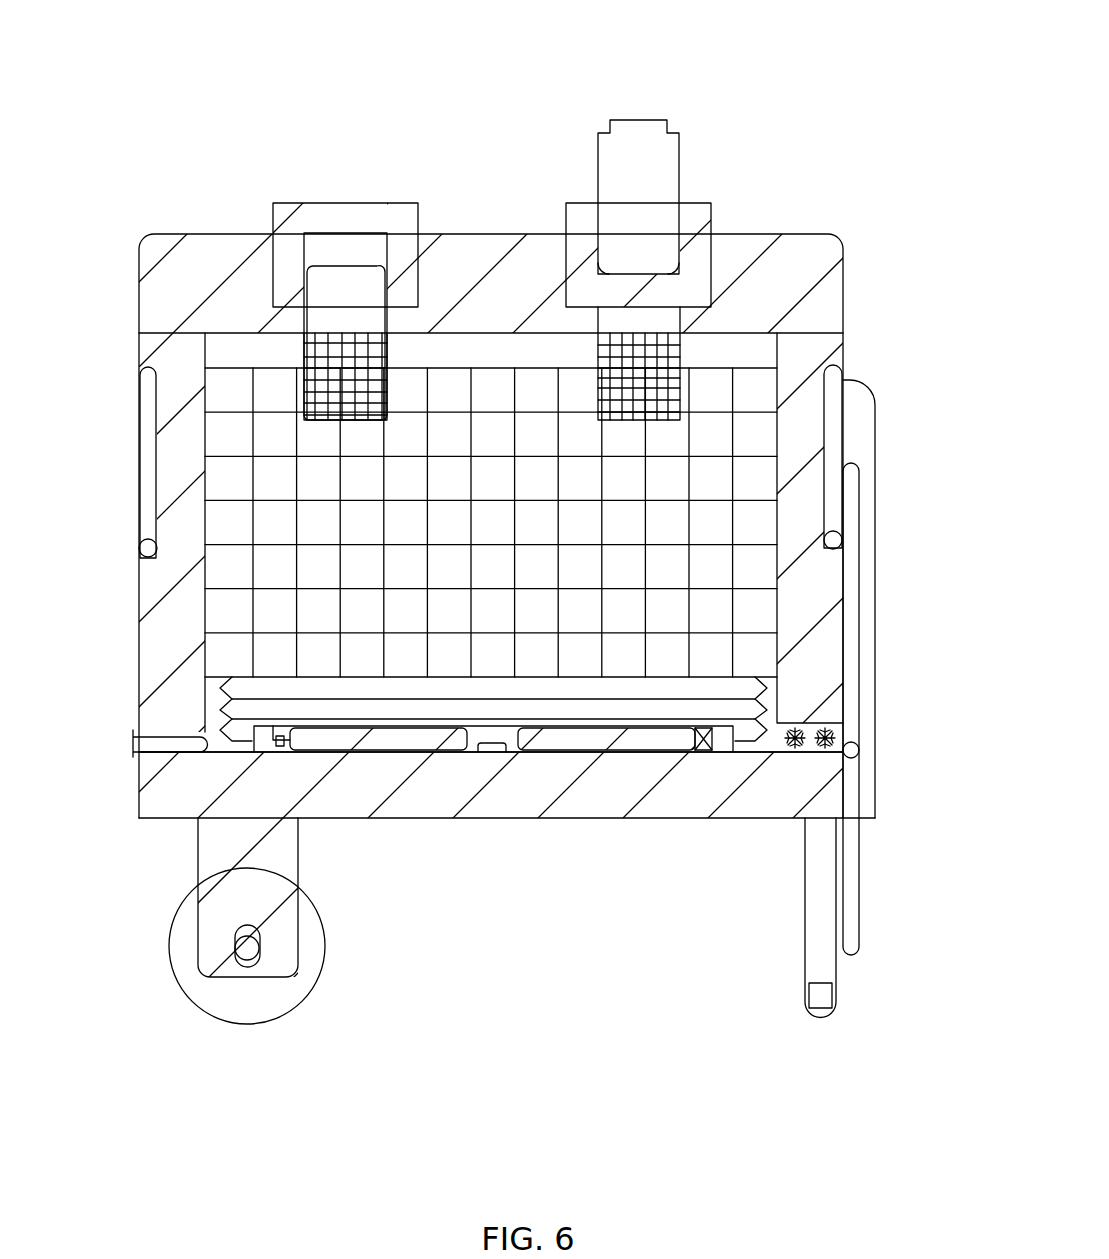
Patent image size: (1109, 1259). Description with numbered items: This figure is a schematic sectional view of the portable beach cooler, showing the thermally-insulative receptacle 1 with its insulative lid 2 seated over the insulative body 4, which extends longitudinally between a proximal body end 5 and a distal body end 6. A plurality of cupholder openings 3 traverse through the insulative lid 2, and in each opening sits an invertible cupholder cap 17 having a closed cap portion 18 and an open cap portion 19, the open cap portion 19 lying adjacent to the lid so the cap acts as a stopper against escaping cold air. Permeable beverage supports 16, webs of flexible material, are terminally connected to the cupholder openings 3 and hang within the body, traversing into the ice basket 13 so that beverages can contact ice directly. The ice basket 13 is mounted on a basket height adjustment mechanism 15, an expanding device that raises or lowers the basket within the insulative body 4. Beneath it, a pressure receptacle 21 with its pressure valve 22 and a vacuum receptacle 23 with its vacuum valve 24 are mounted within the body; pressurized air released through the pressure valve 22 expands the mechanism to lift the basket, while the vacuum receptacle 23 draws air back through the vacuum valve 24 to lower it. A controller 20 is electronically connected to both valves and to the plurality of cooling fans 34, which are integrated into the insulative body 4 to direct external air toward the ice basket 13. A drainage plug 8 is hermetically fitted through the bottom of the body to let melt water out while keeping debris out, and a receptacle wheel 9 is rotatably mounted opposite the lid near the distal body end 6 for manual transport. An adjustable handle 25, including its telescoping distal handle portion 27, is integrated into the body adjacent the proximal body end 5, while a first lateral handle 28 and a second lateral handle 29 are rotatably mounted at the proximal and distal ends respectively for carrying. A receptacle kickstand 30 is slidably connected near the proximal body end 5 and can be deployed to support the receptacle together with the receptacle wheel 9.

The thermally-insulative receptacle 1 is at (250, 34).
The insulative lid 2 is at (210, 245).
The cupholder openings 3 is at (335, 245).
The insulative body 4 is at (520, 798).
The proximal body end 5 is at (708, 556).
The distal body end 6 is at (267, 555).
The drainage plug 8 is at (195, 755).
The receptacle wheels 9 is at (290, 992).
The ice basket 13 is at (254, 351).
The basket height adjustment mechanism 15 is at (230, 712).
The permeable beverage supports 16 is at (384, 405).
The invertible cupholder cap 17 is at (374, 166).
The closed cap portion 18 is at (366, 257).
The open cap portion 19 is at (642, 224).
The controller 20 is at (487, 752).
The pressure receptacle 21 is at (385, 735).
The pressure valve 22 is at (285, 745).
The vacuum receptacle 23 is at (638, 740).
The vacuum valve 24 is at (712, 742).
The adjustable handle 25 is at (912, 670).
The distal handle portion 27 is at (896, 378).
The first lateral handle 28 is at (838, 428).
The second lateral handle 29 is at (150, 515).
The receptacle kickstand 30 is at (820, 968).
The cooling fans 34 is at (828, 745).